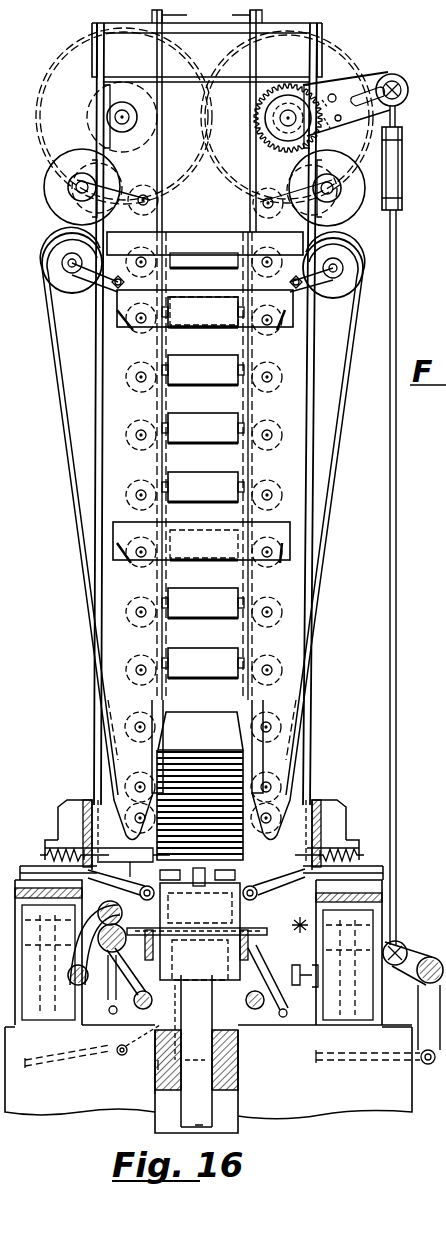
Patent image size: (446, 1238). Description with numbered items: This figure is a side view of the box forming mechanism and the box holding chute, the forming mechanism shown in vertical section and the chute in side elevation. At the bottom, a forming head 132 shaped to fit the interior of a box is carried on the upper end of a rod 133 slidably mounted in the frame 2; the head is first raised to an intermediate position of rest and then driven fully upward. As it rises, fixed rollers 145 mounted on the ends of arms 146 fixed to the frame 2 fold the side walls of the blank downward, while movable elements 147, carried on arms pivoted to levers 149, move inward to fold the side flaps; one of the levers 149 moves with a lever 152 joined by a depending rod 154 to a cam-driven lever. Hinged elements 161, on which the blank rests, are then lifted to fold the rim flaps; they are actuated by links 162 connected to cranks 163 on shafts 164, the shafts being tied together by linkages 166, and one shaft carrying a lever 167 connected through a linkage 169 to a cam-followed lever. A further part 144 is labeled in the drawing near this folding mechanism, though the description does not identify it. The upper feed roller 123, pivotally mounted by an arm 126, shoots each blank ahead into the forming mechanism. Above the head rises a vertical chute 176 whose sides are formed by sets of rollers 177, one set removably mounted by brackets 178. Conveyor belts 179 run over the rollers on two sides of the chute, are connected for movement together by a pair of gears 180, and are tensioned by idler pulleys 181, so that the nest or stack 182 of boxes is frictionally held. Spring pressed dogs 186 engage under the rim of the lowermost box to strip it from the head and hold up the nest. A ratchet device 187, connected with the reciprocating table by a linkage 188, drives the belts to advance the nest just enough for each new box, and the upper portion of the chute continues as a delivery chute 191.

The delivery chute 191 is at (207, 43).
The gears 180 is at (52, 72).
The ratchet device 187 is at (340, 84).
The linkage 188 is at (396, 718).
The idler pulleys 181 is at (72, 292).
The conveyor belts 179 is at (66, 447).
The brackets 178 is at (147, 328).
The rollers 177 is at (228, 373).
The vertical chute 176 is at (118, 497).
The nest or stack of boxes 182 is at (210, 739).
The spring pressed dogs 186 is at (128, 860).
The rollers 145 is at (200, 872).
The movable elements 147 is at (200, 931).
The end feed rollers 123 is at (121, 911).
The arms 146 is at (276, 888).
The hinged elements 161 is at (285, 919).
The cross bar 144 is at (296, 922).
The levers 149 is at (414, 988).
The arm 126 is at (100, 955).
The links 162 is at (120, 978).
The forming head 132 is at (210, 978).
The linkages 166 is at (290, 985).
The cranks 163 is at (140, 1000).
The shafts 164 is at (255, 1009).
The lever 167 is at (139, 1043).
The lever 152 is at (158, 1065).
The depending rod 154 is at (137, 1091).
The frame 2 is at (228, 1065).
The rod 133 is at (205, 1105).
The linkage 169 is at (55, 1065).